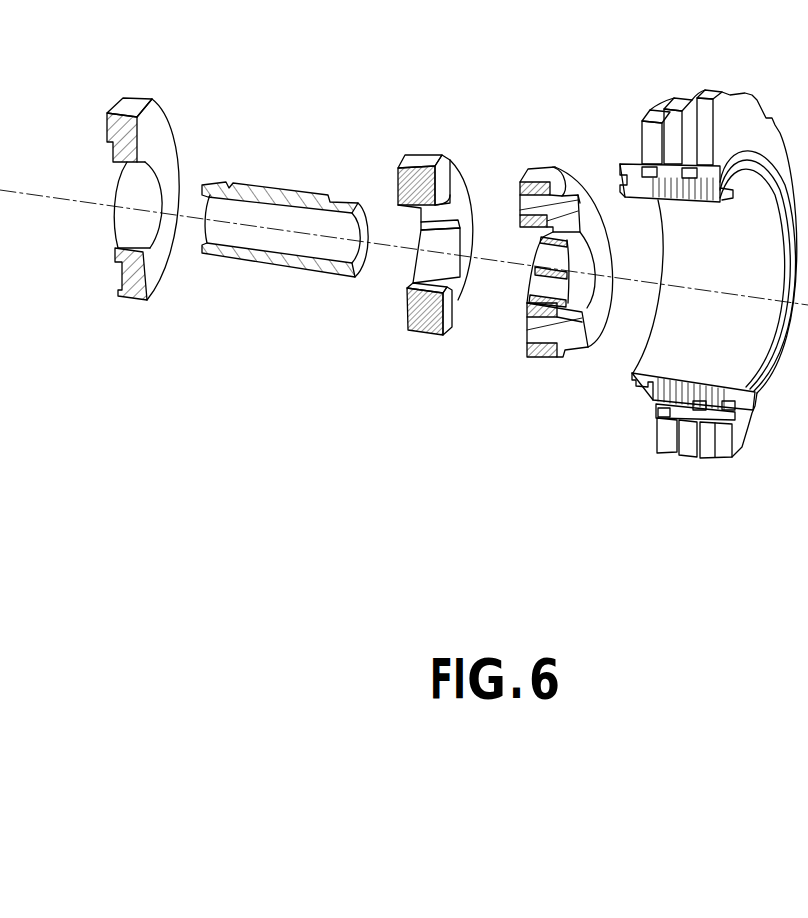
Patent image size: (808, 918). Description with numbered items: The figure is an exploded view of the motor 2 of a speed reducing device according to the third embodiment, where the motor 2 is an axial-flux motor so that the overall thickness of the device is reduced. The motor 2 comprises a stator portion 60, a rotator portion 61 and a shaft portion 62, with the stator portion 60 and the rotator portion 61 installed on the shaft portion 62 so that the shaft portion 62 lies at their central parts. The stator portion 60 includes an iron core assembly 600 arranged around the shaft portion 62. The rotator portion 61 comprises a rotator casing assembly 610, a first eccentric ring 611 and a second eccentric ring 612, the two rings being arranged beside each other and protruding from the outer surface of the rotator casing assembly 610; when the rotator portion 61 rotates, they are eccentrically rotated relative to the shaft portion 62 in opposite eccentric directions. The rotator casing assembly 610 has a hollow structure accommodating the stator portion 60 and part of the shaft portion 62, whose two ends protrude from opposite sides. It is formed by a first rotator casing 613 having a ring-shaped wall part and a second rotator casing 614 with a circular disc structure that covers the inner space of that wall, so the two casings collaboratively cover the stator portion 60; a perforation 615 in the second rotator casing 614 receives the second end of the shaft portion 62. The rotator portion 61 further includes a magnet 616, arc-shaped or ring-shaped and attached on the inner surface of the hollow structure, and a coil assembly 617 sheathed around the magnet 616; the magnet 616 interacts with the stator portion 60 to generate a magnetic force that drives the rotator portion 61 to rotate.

The motor 2 is at (398, 148).
The stator portion 60 is at (432, 163).
The iron core assembly 600 is at (412, 335).
The rotator portion 61 is at (633, 352).
The shaft portion 62 is at (225, 182).
The rotator casing assembly 610 is at (405, 530).
The first eccentric ring 611 is at (683, 170).
The second eccentric ring 612 is at (641, 178).
The first rotator casing 613 is at (660, 420).
The second rotator casing 614 is at (135, 318).
The perforation 615 is at (133, 230).
The magnet 616 is at (578, 175).
The coil assembly 617 is at (528, 170).